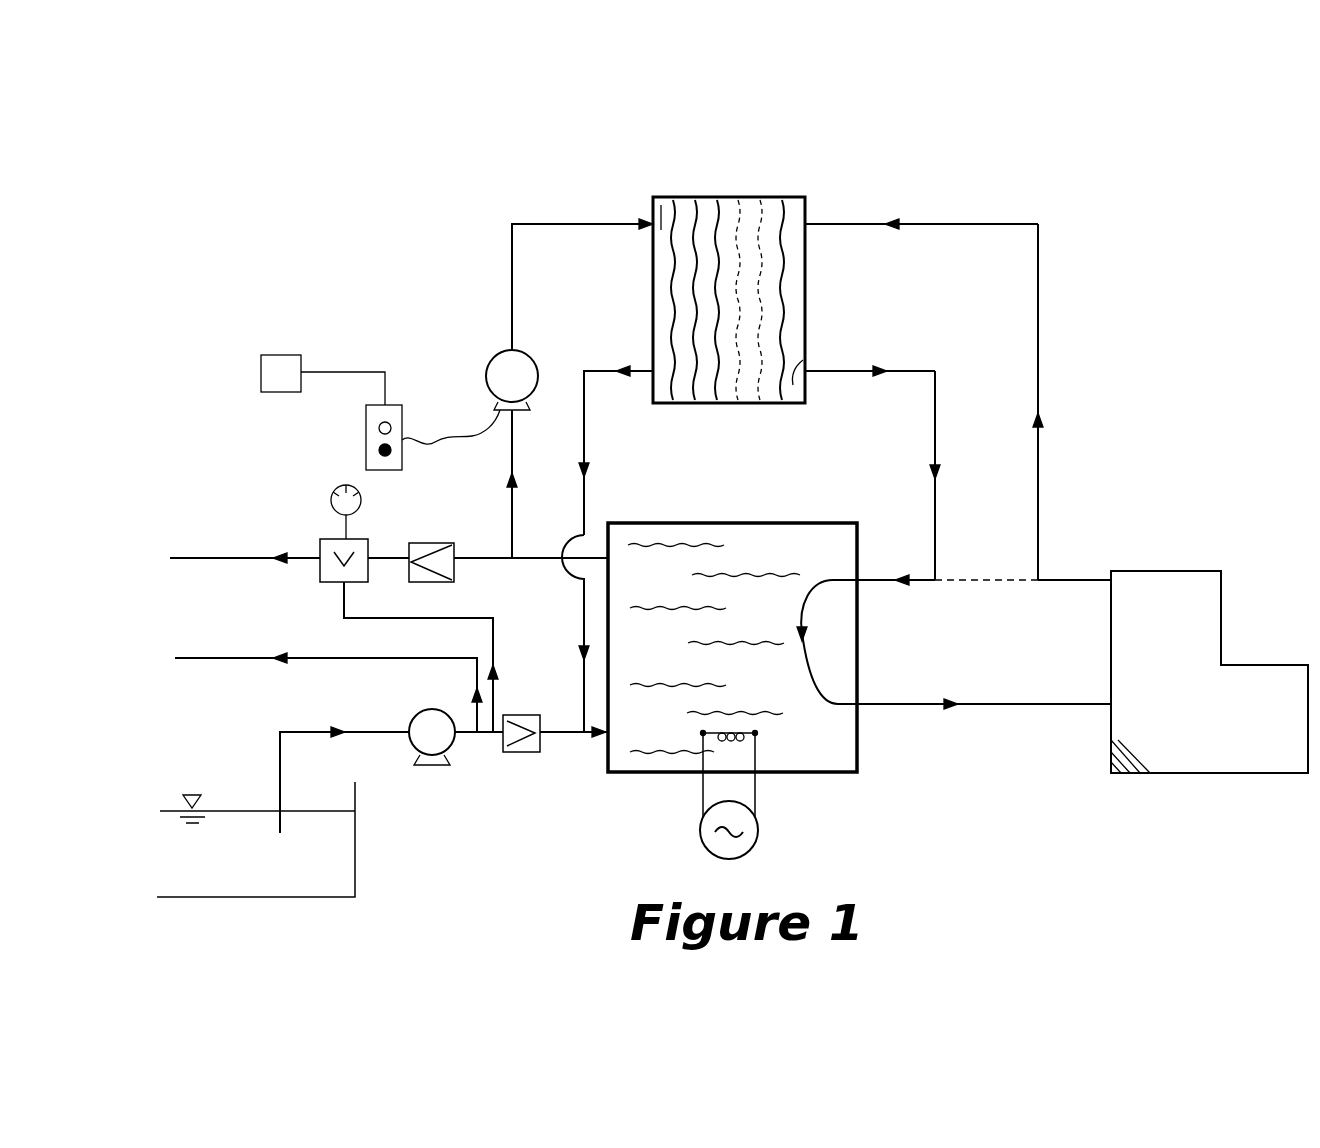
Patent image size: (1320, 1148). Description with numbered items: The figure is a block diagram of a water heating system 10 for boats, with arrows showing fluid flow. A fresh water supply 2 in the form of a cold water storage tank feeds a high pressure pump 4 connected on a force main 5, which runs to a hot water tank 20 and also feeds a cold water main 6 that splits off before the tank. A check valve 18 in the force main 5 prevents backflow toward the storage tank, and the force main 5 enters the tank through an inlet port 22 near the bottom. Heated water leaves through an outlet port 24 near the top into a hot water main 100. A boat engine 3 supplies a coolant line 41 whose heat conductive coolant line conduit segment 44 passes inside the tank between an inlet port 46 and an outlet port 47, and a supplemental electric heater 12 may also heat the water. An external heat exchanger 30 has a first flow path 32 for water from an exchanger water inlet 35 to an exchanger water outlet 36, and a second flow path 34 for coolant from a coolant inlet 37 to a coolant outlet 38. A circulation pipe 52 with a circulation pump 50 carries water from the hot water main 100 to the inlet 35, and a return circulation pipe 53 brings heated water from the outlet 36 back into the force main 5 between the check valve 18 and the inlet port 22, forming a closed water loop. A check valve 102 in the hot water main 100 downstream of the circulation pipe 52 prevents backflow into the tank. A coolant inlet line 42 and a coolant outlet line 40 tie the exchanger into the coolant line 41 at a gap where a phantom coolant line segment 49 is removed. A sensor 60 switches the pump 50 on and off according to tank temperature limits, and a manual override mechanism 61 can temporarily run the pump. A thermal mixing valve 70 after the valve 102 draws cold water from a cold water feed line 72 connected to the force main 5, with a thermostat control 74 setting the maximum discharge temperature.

The water heating system 10 is at (342, 125).
The fresh water supply 2 is at (240, 874).
The boat engine 3 is at (1205, 734).
The high pressure pump 4 is at (432, 766).
The force main 5 is at (474, 733).
The cold water main 6 is at (203, 661).
The supplemental electric heater 12 is at (755, 737).
The check valve 18 is at (528, 715).
The hot water tank 20 is at (826, 777).
The inlet port 22 is at (608, 738).
The outlet port 24 is at (604, 535).
The heat exchanger 30 is at (735, 197).
The first flow path 32 is at (662, 200).
The second flow path 34 is at (803, 360).
The exchanger water inlet 35 is at (652, 217).
The exchanger water outlet 36 is at (653, 367).
The coolant inlet 37 is at (805, 223).
The coolant outlet 38 is at (808, 367).
The coolant outlet line 40 is at (937, 514).
The coolant line 41 is at (1059, 590).
The coolant inlet line 42 is at (951, 225).
The coolant line conduit segment 44 is at (836, 704).
The inlet port 46 is at (862, 580).
The outlet port 47 is at (862, 704).
The coolant line segment 49 is at (977, 590).
The circulation pump 50 is at (497, 350).
The circulation pipe 52 is at (510, 508).
The return circulation pipe 53 is at (582, 620).
The sensor 60 is at (365, 427).
The manual override mechanism 61 is at (285, 353).
The thermal mixing valve 70 is at (320, 578).
The cold water feed line 72 is at (413, 620).
The thermostat control 74 is at (331, 497).
The hot water main 100 is at (212, 556).
The check valve 102 is at (455, 577).